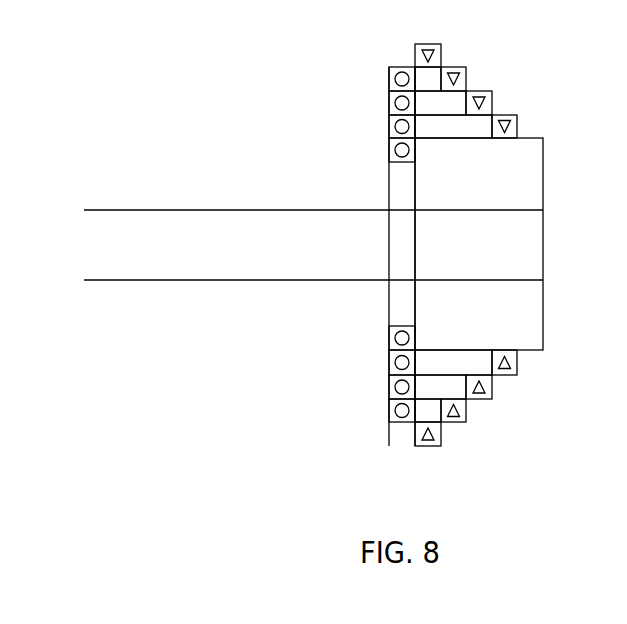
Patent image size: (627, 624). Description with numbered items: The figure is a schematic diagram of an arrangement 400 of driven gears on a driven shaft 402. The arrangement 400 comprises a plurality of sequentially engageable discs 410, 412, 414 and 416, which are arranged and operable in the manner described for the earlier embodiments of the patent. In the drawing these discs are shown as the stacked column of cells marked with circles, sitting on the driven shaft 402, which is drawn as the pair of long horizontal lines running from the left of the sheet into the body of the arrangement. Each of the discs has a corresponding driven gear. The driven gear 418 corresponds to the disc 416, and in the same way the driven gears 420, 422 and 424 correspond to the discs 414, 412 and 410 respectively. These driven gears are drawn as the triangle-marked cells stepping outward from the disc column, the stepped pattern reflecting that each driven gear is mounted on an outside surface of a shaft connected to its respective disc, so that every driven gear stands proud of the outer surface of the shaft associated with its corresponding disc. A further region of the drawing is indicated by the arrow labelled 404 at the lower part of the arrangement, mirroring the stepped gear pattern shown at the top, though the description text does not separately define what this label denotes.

The arrangement 400 is at (183, 54).
The driven shaft 402 is at (120, 214).
The lower stair-step contact region 404 is at (308, 354).
The disc 410 is at (380, 149).
The disc 412 is at (380, 120).
The disc 414 is at (380, 89).
The disc 416 is at (380, 64).
The driven gear 418 is at (420, 36).
The driven gear 420 is at (445, 59).
The driven gear 422 is at (471, 83).
The driven gear 424 is at (497, 107).